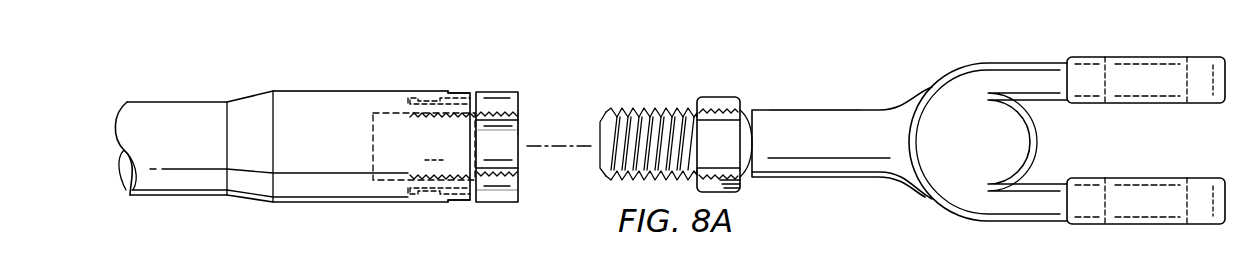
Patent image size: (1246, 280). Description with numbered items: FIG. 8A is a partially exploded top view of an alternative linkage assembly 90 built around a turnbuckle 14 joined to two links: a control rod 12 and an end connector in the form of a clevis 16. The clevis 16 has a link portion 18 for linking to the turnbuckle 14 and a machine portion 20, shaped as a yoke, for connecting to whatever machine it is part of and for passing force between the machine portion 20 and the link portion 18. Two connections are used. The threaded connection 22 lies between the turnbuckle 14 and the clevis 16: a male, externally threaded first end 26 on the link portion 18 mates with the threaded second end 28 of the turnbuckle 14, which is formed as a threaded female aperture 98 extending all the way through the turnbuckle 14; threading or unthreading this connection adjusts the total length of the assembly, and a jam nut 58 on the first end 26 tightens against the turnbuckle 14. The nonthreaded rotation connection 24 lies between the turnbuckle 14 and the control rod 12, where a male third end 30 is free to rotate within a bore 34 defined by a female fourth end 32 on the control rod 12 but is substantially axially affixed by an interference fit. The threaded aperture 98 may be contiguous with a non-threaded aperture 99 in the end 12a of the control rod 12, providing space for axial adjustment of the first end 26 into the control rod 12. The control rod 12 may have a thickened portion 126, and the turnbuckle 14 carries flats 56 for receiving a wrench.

The control rod 12 is at (165, 102).
The end of the control rod 12a is at (318, 98).
The thickened portion 126 is at (320, 159).
The rotation connection 24 is at (450, 82).
The bore 34 is at (410, 112).
The fourth end 32 is at (393, 188).
The non-threaded aperture 99 is at (388, 172).
The third end 30 is at (440, 152).
The turnbuckle 14 is at (505, 90).
The flats 56 is at (484, 159).
The second end 28 is at (505, 191).
The threaded female aperture 98 is at (521, 130).
The threaded connection 22 is at (635, 88).
The first threaded end 26 is at (660, 110).
The jam nut 58 is at (718, 97).
The linkage assembly 90 is at (790, 78).
The link portion 18 is at (848, 110).
The clevis 16 is at (963, 62).
The machine portion 20 is at (1030, 80).